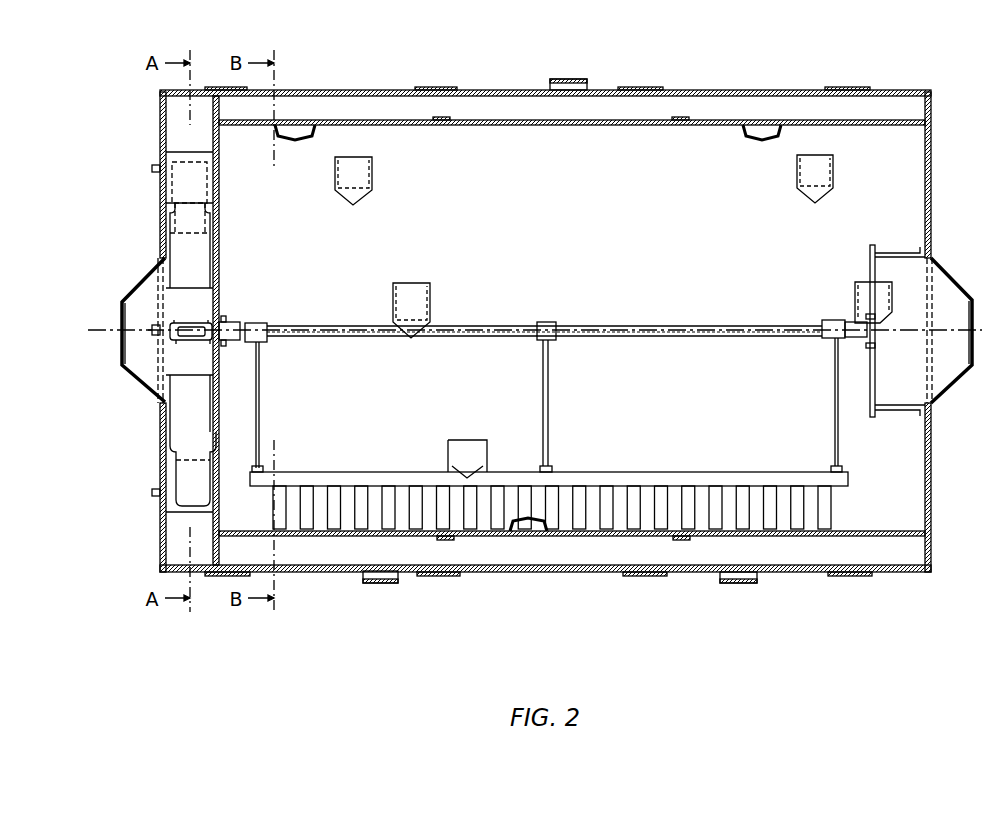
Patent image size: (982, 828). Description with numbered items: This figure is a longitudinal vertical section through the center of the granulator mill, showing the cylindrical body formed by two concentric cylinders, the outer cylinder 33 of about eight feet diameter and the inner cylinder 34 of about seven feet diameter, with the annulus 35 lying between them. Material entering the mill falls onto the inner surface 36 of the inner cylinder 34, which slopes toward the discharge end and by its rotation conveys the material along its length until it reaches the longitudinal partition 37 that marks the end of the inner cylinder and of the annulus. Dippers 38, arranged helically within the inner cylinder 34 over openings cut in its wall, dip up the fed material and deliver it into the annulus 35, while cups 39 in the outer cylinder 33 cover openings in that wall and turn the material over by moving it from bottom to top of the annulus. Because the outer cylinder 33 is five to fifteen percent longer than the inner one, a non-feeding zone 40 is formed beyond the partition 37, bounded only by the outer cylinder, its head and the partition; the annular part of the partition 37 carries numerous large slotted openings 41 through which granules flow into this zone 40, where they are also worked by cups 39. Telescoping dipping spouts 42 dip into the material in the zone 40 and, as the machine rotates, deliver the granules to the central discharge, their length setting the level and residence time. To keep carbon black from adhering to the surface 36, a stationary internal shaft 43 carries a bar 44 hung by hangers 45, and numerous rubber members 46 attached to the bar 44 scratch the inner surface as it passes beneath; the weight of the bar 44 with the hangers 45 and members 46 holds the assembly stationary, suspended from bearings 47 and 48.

The outer cylinder 33 is at (398, 90).
The inner cylinder 34 is at (525, 122).
The annulus 35 is at (523, 553).
The inner surface of inner cylinder 36 is at (838, 530).
The longitudinal partition 37 is at (219, 223).
The dippers 38 is at (835, 170).
The cups 39 is at (580, 80).
The non-feeding zone 40 is at (190, 408).
The slotted openings 41 is at (210, 110).
The dipping spouts 42 is at (175, 478).
The stationary internal shaft 43 is at (627, 325).
The bar 44 is at (652, 470).
The hangers 45 is at (259, 405).
The rubber members 46 is at (335, 523).
The bearing 47 is at (253, 323).
The bearing 48 is at (835, 322).